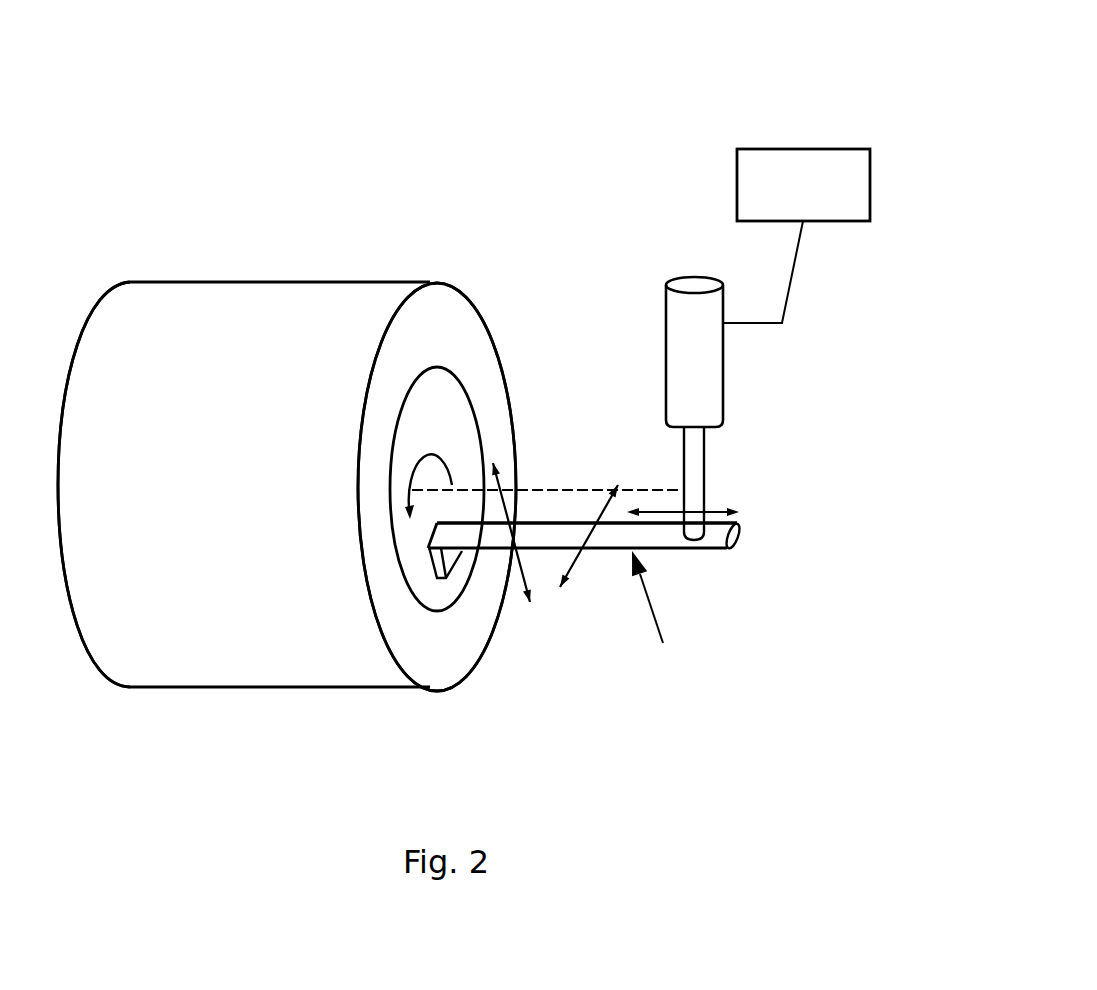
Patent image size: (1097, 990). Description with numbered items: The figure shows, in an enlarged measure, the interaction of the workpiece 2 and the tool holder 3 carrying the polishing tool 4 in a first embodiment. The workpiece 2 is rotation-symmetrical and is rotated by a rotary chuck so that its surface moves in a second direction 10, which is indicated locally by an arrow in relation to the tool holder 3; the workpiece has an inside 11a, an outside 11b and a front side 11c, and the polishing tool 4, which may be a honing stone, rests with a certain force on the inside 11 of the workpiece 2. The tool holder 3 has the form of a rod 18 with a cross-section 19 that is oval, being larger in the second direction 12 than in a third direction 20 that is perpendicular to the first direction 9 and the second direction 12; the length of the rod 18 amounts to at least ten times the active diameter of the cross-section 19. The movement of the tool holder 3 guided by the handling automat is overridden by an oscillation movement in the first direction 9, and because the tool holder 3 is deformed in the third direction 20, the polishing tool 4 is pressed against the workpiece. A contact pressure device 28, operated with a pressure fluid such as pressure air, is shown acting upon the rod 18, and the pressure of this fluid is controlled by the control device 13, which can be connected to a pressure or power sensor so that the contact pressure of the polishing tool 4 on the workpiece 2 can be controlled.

The workpiece 2 is at (162, 595).
The tool holder 3 is at (657, 618).
The polishing tool 4 is at (447, 579).
The first direction 9 is at (713, 497).
The second direction 10 is at (403, 467).
The inside of the workpiece 11 is at (300, 330).
The inside 11a is at (438, 370).
The outside 11b is at (387, 295).
The front side 11c is at (447, 322).
The second direction 12 is at (582, 572).
The control device 13 is at (803, 182).
The rod 18 is at (652, 535).
The cross-section 19 is at (733, 558).
The third direction 20 is at (522, 593).
The contact pressure device 28 is at (695, 288).